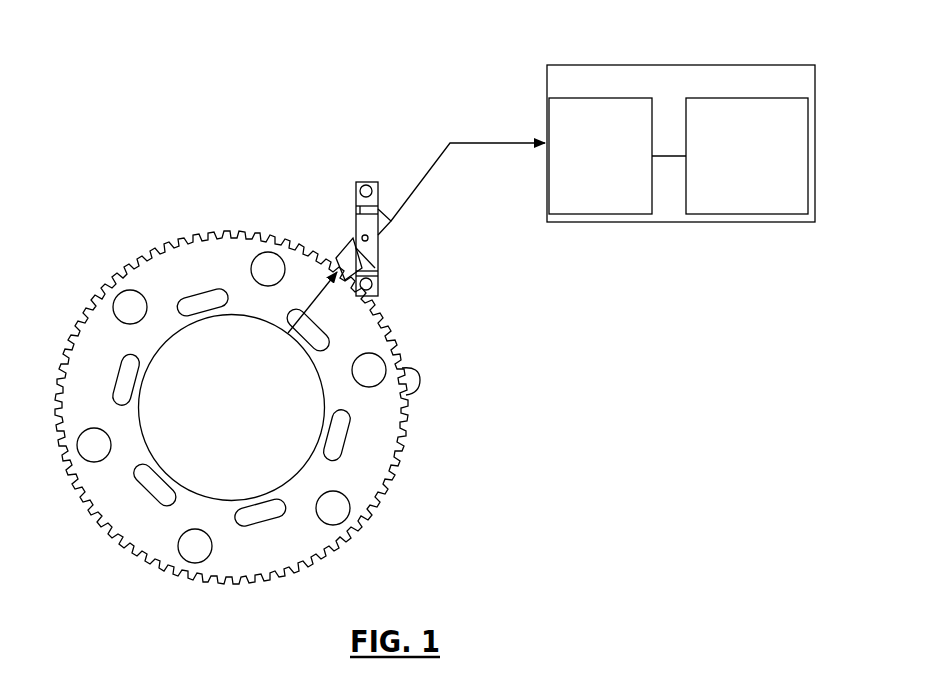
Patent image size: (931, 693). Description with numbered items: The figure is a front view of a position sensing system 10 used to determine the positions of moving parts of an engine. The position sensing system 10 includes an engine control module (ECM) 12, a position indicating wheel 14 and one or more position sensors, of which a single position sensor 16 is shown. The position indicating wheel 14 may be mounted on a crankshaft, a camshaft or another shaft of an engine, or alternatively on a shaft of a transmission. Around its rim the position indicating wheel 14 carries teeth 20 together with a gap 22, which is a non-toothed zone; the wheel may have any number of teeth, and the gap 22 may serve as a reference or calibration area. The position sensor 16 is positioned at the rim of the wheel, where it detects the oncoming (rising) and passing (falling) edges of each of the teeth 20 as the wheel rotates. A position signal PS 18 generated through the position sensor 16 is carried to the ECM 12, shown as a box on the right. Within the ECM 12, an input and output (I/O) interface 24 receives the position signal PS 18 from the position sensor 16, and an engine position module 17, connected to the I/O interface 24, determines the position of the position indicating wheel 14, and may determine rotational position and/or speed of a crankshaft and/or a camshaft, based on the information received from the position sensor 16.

The position sensing system 10 is at (108, 65).
The engine control module 12 is at (752, 65).
The position indicating wheel 14 is at (160, 257).
The position sensor 16 is at (384, 235).
The engine position module 17 is at (750, 214).
The position signal PS 18 is at (472, 146).
The teeth 20 is at (396, 363).
The gap 22 is at (393, 463).
The input and output interface 24 is at (600, 214).